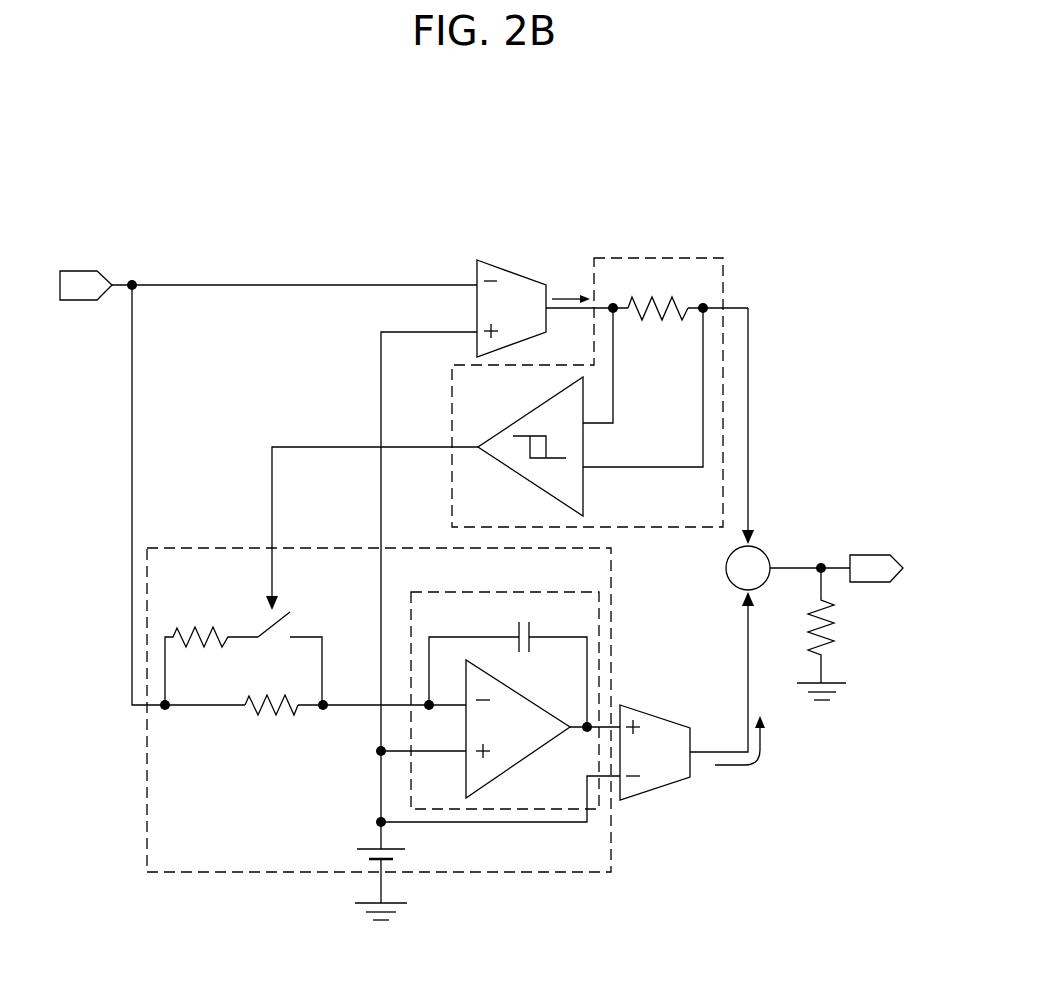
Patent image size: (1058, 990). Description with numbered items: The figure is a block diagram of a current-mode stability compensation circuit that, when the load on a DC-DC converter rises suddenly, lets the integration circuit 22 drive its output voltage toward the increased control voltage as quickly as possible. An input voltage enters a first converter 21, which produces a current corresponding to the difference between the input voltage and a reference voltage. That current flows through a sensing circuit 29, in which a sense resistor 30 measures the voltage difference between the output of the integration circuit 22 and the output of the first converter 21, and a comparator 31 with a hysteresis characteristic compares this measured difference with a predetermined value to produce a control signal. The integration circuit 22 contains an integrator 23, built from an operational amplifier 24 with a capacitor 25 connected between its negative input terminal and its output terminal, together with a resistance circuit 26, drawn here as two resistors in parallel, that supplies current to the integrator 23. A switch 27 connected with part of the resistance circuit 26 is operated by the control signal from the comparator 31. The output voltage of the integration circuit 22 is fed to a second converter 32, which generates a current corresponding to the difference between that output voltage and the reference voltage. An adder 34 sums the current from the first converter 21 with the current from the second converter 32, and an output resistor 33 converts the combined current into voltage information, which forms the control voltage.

The first converter 21 is at (518, 273).
The integration circuit 22 is at (611, 853).
The integrator 23 is at (450, 812).
The operational amplifier 24 is at (542, 748).
The capacitor 25 is at (525, 653).
The resistance circuit 26 is at (255, 697).
The switch 27 is at (275, 625).
The sensing circuit 29 is at (703, 257).
The sense resistor 30 is at (652, 322).
The comparator 31 is at (513, 473).
The second converter 32 is at (680, 692).
The output resistor 33 is at (846, 625).
The adder 34 is at (765, 551).